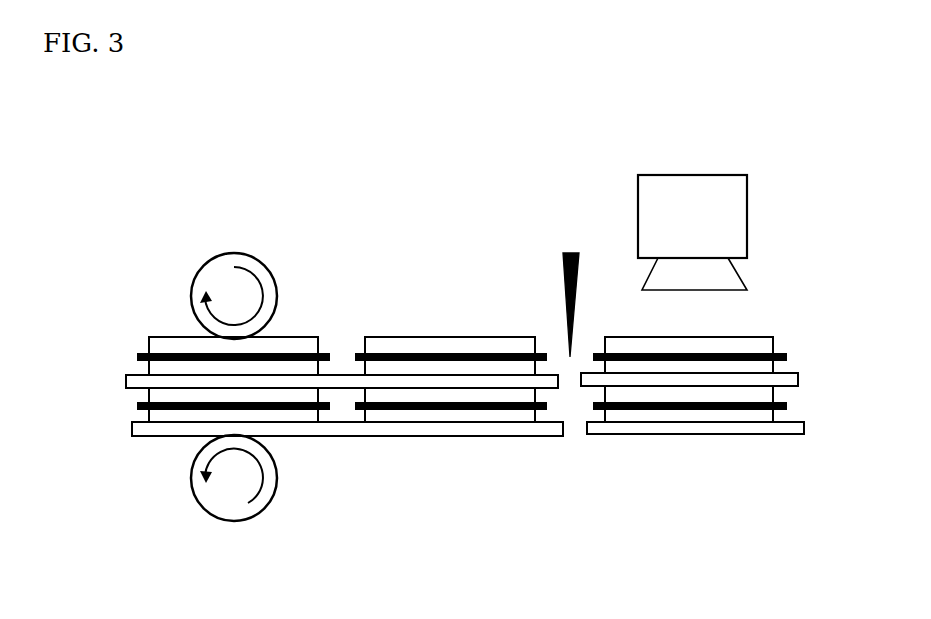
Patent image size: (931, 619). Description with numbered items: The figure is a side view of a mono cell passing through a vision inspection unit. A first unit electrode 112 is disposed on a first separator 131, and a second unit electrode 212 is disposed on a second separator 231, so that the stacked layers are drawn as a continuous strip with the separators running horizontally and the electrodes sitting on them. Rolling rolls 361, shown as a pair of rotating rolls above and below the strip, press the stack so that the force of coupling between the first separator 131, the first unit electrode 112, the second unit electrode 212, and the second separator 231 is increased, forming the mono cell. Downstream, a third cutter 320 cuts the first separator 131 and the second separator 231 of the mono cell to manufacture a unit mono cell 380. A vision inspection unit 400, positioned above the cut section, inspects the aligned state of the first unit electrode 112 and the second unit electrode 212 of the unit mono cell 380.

The first unit electrode 112 is at (112, 337).
The first separator 131 is at (126, 378).
The second unit electrode 212 is at (112, 413).
The second separator 231 is at (132, 427).
The rolling rolls 361 is at (233, 252).
The third cutter 320 is at (575, 253).
The unit mono cell 380 is at (773, 464).
The vision inspection unit 400 is at (683, 178).